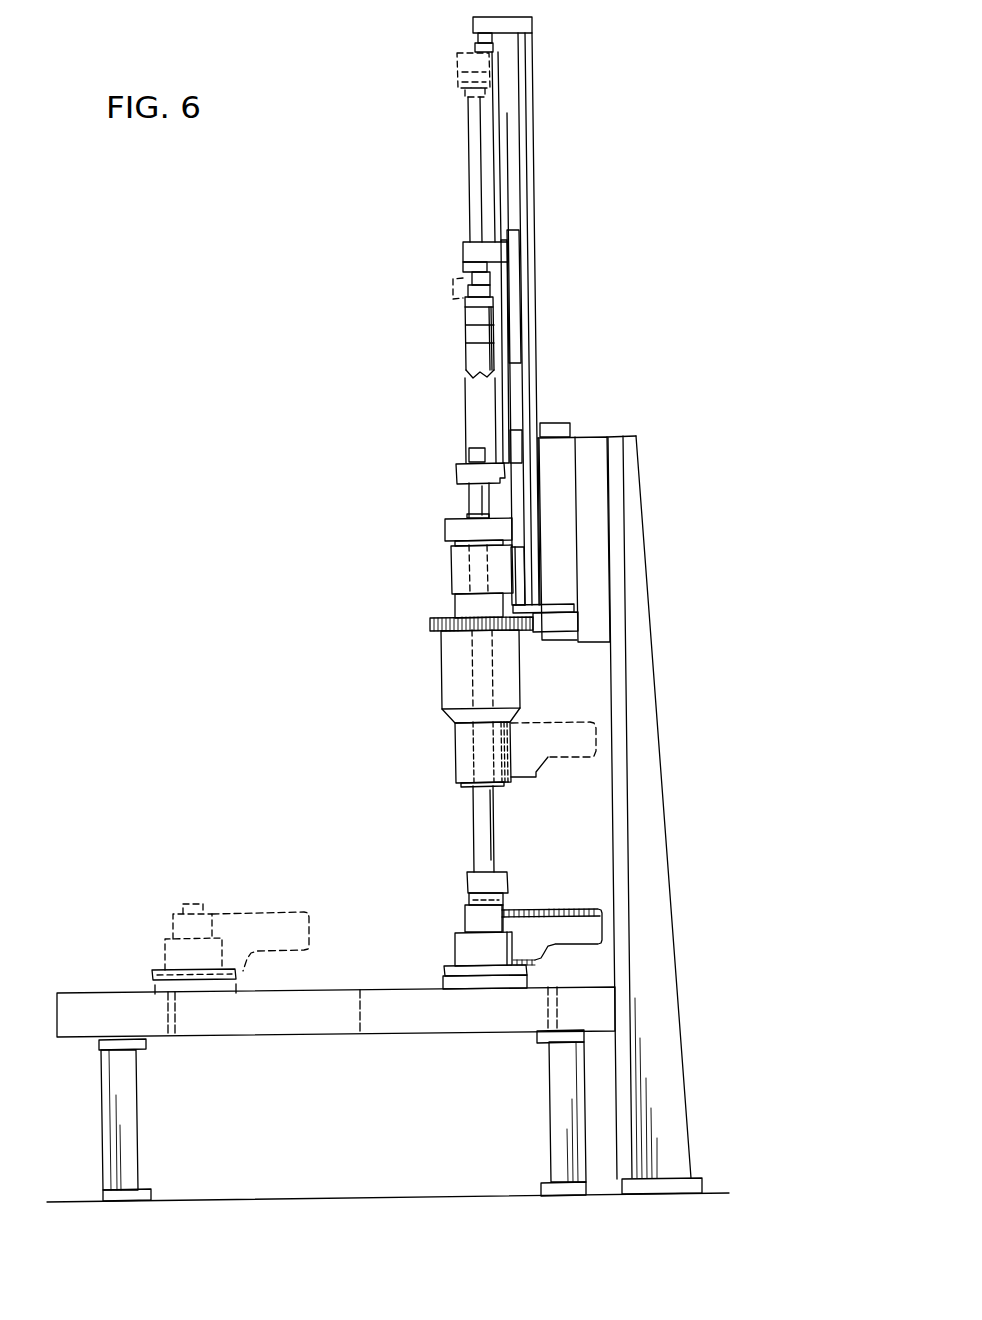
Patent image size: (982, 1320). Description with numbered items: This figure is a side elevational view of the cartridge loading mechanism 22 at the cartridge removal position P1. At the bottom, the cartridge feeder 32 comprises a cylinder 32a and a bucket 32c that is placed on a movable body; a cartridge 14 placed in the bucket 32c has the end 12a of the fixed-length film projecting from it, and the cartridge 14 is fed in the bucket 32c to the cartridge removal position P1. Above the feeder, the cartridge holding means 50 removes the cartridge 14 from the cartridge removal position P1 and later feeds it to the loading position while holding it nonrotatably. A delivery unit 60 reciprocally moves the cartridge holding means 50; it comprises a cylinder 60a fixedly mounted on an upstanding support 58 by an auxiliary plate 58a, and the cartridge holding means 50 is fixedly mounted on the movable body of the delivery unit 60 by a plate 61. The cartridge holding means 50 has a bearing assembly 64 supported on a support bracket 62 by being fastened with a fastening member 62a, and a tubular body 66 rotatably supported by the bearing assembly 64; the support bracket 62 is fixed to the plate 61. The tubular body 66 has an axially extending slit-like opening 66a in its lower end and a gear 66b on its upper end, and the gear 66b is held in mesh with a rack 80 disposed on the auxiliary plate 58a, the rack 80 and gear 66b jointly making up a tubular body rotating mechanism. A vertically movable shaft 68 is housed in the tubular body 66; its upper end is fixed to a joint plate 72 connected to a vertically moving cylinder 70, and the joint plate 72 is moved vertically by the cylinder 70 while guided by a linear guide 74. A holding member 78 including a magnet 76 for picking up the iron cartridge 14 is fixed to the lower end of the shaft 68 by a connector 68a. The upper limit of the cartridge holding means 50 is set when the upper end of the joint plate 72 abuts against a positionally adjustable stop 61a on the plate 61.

The cartridge loading mechanism 22 is at (535, 194).
The plate 61 is at (523, 230).
The stop 61a is at (483, 43).
The linear guide 74 is at (516, 287).
The joint plate 72 is at (500, 320).
The vertically moving cylinder 70 is at (468, 366).
The cartridge holding means 50 is at (459, 462).
The delivery unit 60 is at (553, 436).
The cylinder 60a is at (563, 464).
The upstanding support 58 is at (647, 815).
The auxiliary plate 58a is at (593, 519).
The support bracket 62 is at (454, 553).
The fastening member 62a is at (446, 526).
The bearing assembly 64 is at (458, 599).
The tubular body 66 is at (441, 669).
The slit-like opening 66a is at (518, 744).
The gear 66b is at (440, 619).
The rack 80 is at (560, 626).
The vertically movable shaft 68 is at (485, 823).
The connector 68a is at (501, 880).
The holding member 78 is at (431, 885).
The magnet 76 is at (464, 886).
The cartridge removal position P1 is at (431, 859).
The cartridge 14 is at (465, 920).
The end of fixed-length film 12a is at (568, 926).
The cartridge feeder 32 is at (91, 994).
The cylinder 32a is at (122, 1003).
The bucket 32c is at (455, 951).